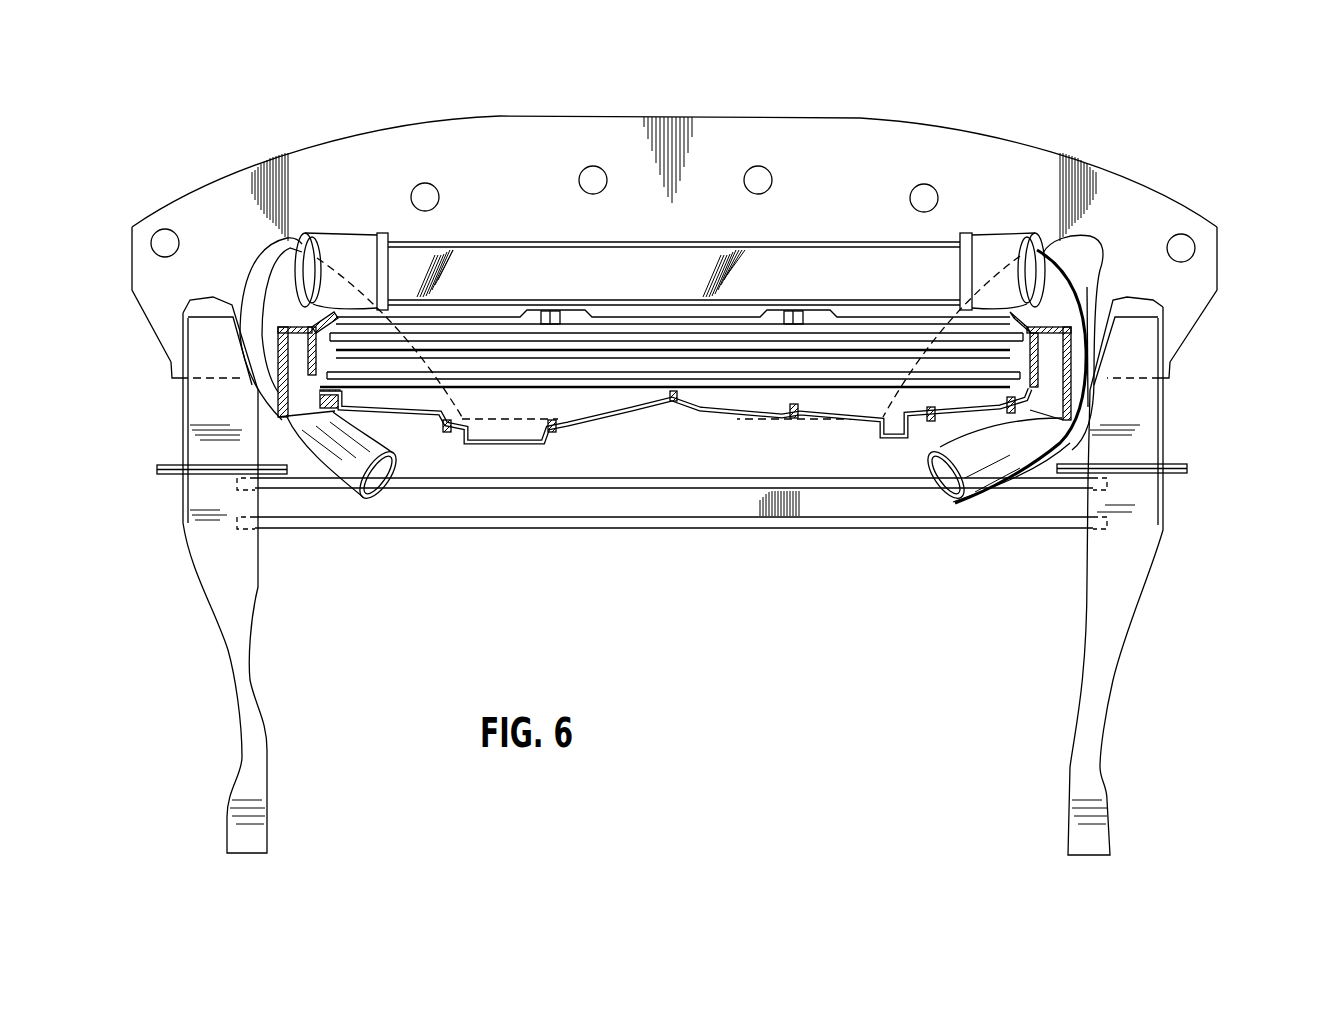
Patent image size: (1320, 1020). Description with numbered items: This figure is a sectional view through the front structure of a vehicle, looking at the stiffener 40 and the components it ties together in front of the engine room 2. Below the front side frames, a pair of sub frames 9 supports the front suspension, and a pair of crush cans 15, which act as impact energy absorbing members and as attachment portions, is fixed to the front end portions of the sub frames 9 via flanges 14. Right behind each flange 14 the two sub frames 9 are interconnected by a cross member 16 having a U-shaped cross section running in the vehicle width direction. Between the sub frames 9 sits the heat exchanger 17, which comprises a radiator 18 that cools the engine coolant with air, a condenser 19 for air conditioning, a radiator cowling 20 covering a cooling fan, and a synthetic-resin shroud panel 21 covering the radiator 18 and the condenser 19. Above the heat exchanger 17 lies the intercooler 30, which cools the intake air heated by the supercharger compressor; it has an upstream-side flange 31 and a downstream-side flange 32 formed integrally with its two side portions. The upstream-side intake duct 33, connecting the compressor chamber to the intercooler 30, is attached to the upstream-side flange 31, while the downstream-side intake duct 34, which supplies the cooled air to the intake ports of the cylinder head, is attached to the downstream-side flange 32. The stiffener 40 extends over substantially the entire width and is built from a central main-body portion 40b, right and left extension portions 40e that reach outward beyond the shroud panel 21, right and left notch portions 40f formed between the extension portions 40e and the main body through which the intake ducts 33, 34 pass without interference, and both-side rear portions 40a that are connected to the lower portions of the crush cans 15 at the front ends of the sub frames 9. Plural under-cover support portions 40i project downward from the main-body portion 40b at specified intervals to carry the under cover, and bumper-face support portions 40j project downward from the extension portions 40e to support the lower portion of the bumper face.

The engine room 2 is at (750, 712).
The sub frame 9 is at (218, 657).
The flange 14 is at (170, 463).
The crush can 15 is at (183, 410).
The cross member 16 is at (553, 529).
The heat exchanger 17 is at (861, 306).
The radiator 18 is at (593, 391).
The condenser 19 is at (657, 350).
The radiator cowling 20 is at (793, 433).
The shroud panel 21 is at (755, 327).
The intercooler 30 is at (527, 242).
The upstream-side flange 31 is at (1026, 236).
The downstream-side flange 32 is at (319, 236).
The upstream-side intake duct 33 is at (1086, 290).
The downstream-side intake duct 34 is at (350, 493).
The stiffener 40 is at (557, 113).
The both-side rear portion 40a is at (171, 370).
The main-body portion 40b is at (742, 147).
The extension portion 40e is at (152, 275).
The notch portion 40f is at (247, 283).
The under-cover support portion 40i is at (426, 183).
The bumper-face support portion 40j is at (165, 245).